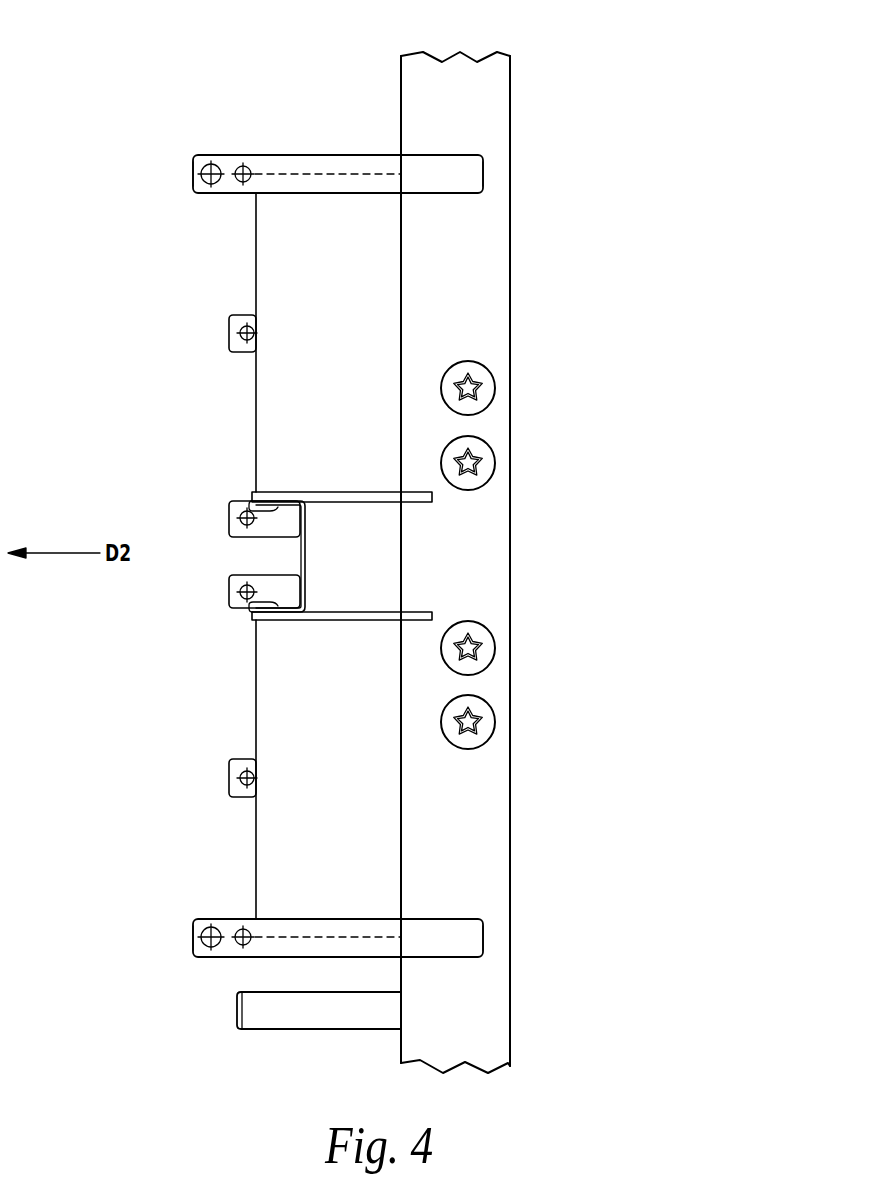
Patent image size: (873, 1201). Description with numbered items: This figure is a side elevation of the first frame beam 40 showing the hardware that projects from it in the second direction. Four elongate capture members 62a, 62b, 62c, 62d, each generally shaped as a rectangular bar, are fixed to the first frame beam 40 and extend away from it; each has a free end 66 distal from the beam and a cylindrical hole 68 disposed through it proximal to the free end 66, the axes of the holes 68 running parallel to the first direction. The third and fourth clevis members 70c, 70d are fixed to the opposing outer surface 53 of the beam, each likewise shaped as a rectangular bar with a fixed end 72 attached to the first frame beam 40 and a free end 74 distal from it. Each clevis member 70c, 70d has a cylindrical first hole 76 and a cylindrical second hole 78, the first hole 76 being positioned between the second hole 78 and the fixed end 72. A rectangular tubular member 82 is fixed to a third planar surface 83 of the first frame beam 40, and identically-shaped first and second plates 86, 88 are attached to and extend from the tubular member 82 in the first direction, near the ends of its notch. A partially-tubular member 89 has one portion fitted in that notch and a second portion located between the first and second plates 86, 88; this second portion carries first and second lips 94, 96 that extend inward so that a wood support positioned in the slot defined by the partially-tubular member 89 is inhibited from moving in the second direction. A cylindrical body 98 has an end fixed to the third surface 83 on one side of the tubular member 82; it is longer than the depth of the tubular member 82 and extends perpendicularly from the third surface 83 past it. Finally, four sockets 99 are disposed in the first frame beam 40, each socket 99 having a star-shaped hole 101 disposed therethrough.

The first frame beam 40 is at (426, 544).
The third planar surface 83 is at (401, 85).
The outer surface 53 is at (469, 260).
The fixed end 72 is at (484, 174).
The third clevis member 70c is at (298, 162).
The fourth clevis member 70d is at (227, 923).
The free end 74 is at (193, 165).
The first hole 76 is at (250, 167).
The second hole 78 is at (215, 168).
The rectangular tubular member 82 is at (265, 432).
The free end 66 is at (240, 547).
The cylindrical hole 68 is at (245, 328).
The elongate capture member 62a is at (240, 320).
The elongate capture member 62b is at (240, 505).
The elongate capture member 62c is at (240, 608).
The elongate capture member 62d is at (240, 763).
The first plate 86 is at (313, 492).
The second plate 88 is at (317, 622).
The partially-tubular member 89 is at (292, 556).
The first lip 94 is at (256, 506).
The second lip 96 is at (255, 605).
The socket 99 is at (468, 365).
The star-shaped hole 101 is at (483, 381).
The cylindrical body 98 is at (278, 1023).